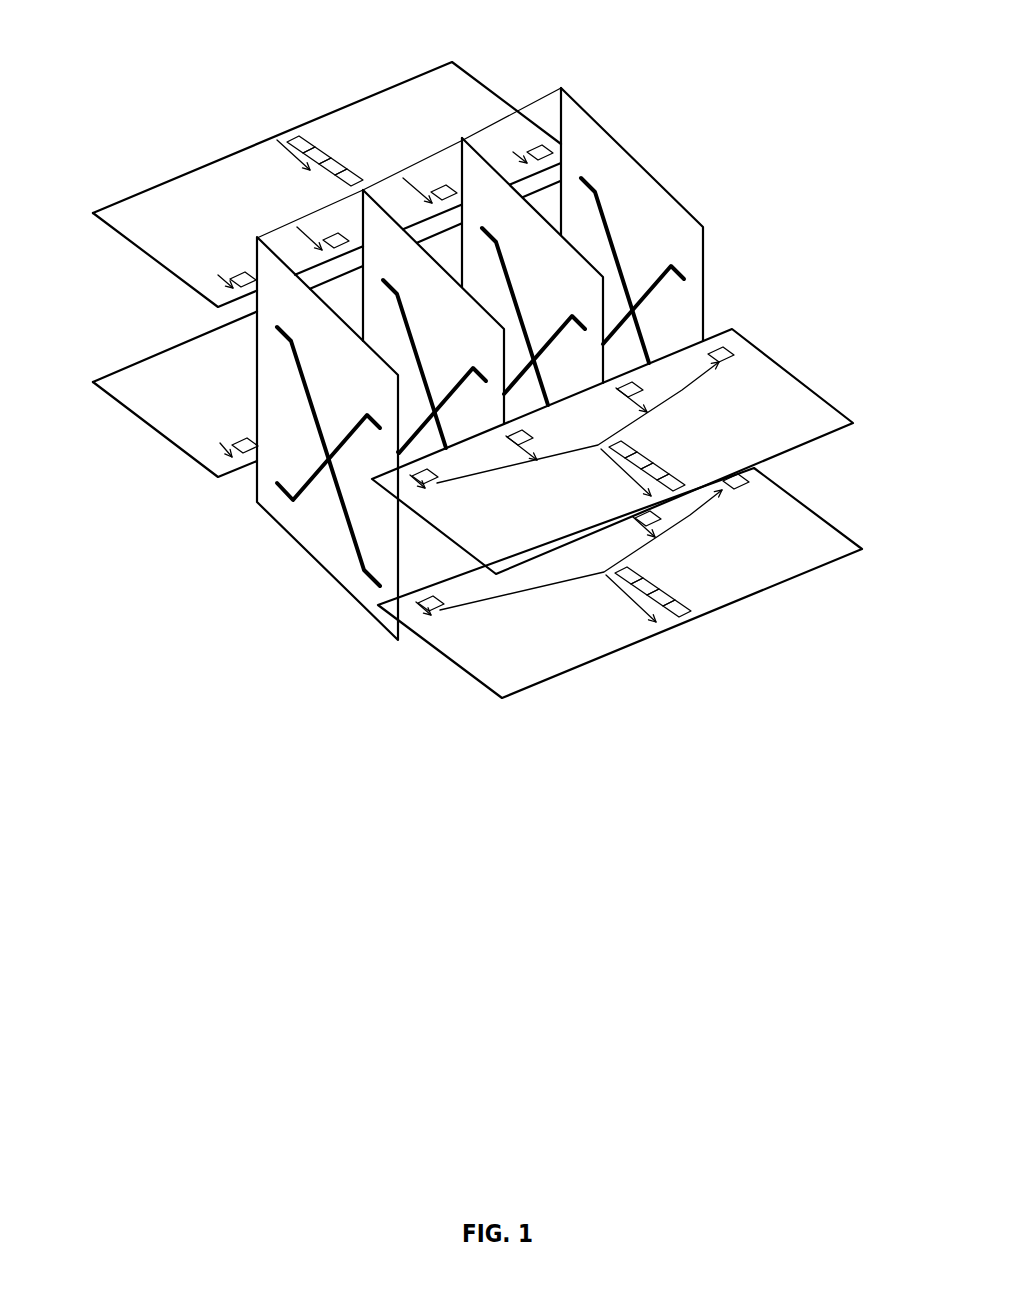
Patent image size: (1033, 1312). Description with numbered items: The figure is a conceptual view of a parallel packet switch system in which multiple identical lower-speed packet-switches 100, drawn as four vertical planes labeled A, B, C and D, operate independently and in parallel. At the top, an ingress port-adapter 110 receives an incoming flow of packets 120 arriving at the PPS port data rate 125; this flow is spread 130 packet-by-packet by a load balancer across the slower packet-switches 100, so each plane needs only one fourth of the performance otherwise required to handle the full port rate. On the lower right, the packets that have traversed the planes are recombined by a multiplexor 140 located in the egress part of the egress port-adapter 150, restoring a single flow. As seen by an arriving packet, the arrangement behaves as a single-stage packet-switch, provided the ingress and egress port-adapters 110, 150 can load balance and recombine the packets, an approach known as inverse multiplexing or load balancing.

The lower-speed packet-switch 100 is at (398, 372).
The ingress port-adapter 110 is at (497, 92).
The incoming flow of packets 120 is at (293, 135).
The PPS port data rate 125 is at (277, 138).
The spreading of packets 130 is at (247, 255).
The multiplexor 140 is at (682, 390).
The egress port-adapter 150 is at (845, 409).